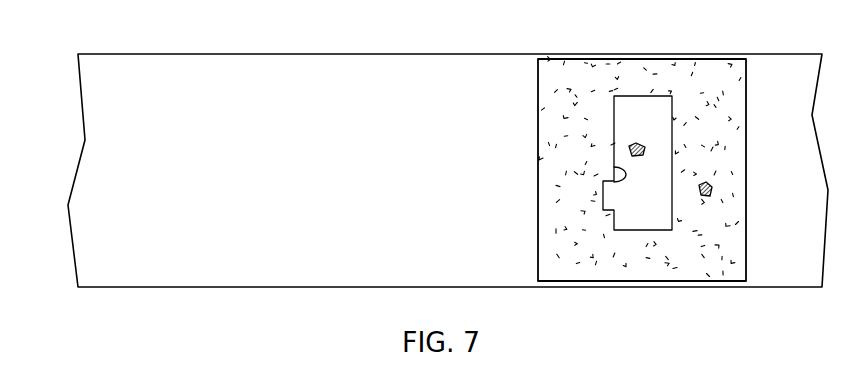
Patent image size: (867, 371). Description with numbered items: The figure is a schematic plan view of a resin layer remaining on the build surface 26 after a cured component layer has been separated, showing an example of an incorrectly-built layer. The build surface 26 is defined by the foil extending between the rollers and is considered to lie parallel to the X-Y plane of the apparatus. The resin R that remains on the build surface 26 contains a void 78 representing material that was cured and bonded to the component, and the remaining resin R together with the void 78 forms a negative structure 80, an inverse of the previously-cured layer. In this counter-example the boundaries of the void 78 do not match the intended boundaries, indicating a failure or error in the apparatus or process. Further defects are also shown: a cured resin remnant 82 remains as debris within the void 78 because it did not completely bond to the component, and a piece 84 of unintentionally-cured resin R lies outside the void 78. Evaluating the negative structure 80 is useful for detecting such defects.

The build surface 26 is at (810, 282).
The resin R is at (733, 88).
The negative structure 80 is at (611, 66).
The void 78 is at (614, 176).
The cured resin remnant 82 is at (630, 147).
The piece of unintentionally-cured resin 84 is at (712, 187).